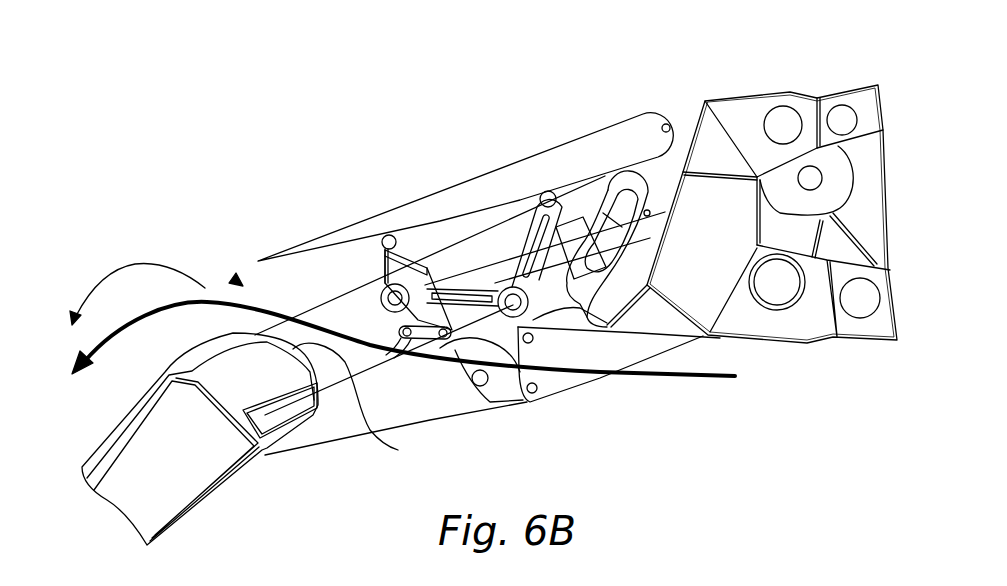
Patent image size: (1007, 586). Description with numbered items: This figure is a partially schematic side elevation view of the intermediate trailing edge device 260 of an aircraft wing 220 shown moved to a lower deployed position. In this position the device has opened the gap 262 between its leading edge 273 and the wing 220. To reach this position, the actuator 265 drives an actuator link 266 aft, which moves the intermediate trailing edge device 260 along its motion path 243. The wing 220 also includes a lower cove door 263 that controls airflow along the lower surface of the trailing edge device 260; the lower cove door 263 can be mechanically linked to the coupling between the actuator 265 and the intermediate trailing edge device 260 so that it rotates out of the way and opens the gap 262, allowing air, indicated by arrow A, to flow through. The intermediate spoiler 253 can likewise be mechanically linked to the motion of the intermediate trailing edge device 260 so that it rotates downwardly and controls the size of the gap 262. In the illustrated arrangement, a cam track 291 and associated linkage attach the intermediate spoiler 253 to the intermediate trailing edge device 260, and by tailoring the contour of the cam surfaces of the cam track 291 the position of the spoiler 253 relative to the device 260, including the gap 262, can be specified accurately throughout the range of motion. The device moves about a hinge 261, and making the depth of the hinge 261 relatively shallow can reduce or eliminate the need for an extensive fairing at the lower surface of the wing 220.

The aircraft wing 220 is at (790, 92).
The motion path 243 is at (115, 264).
The intermediate spoiler 253 is at (468, 195).
The intermediate trailing edge device 260 is at (187, 463).
The hinge 261 is at (482, 388).
The gap 262 is at (236, 280).
The lower cove door 263 is at (384, 262).
The actuator 265 is at (620, 223).
The actuator link 266 is at (558, 250).
The leading edge 273 is at (393, 448).
The cam track 291 is at (606, 270).
The arrow indicating air flow A is at (693, 380).